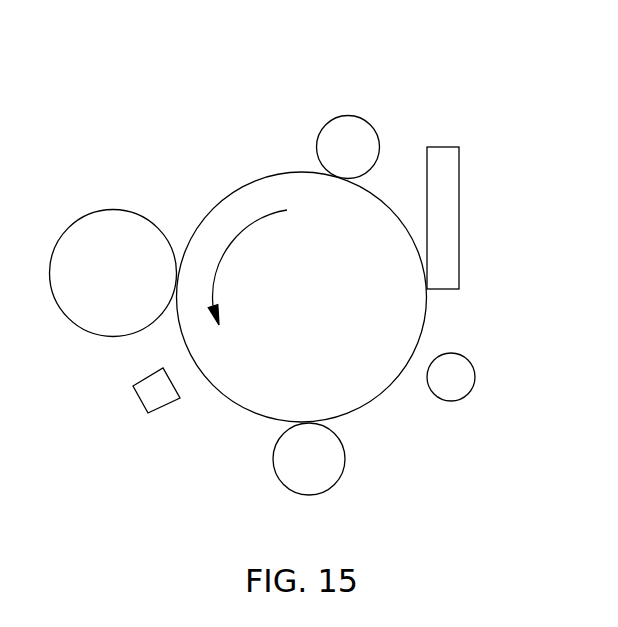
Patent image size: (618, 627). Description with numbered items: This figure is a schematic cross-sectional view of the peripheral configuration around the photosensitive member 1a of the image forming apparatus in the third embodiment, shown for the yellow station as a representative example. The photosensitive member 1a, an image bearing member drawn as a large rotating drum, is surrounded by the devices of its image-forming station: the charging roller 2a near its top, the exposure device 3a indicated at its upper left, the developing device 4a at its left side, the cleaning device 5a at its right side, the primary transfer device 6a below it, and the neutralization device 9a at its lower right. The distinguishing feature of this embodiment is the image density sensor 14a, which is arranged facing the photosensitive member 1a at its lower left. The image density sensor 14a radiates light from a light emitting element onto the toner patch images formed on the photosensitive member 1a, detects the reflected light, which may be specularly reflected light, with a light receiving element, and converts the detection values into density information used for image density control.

The photosensitive member 1a is at (302, 297).
The charging roller 2a is at (349, 116).
The exposure device 3a is at (222, 191).
The developing device 4a is at (113, 273).
The cleaning device 5a is at (451, 147).
The primary transfer device 6a is at (309, 459).
The neutralization device 9a is at (468, 393).
The image density sensor 14a is at (142, 405).